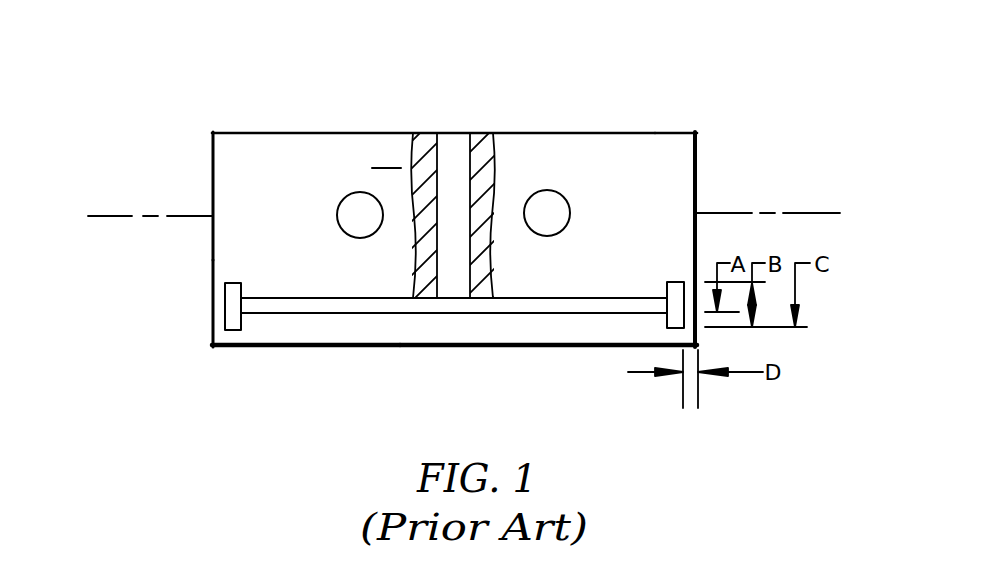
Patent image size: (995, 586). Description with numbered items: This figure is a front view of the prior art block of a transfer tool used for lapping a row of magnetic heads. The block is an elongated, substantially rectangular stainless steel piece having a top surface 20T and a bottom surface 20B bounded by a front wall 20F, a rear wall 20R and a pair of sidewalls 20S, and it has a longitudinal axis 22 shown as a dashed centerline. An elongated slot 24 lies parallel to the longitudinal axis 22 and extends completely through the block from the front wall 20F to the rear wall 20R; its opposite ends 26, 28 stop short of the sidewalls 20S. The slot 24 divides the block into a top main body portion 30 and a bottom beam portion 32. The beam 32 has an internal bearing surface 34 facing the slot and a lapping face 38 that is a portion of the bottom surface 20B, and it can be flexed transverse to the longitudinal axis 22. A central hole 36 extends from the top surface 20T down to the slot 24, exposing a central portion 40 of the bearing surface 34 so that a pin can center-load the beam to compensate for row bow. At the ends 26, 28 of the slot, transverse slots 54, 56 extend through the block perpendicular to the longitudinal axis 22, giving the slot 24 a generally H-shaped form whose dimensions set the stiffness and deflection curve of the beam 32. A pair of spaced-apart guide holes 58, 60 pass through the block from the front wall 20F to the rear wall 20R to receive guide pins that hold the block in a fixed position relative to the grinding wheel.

The top surface 20T is at (272, 133).
The bottom surface 20B is at (277, 348).
The front wall 20F is at (622, 147).
The rear wall 20R is at (655, 133).
The sidewalls 20S is at (213, 192).
The longitudinal axis 22 is at (115, 217).
The elongated slot 24 is at (405, 305).
The end of elongated slot 26 is at (225, 325).
The end of elongated slot 28 is at (691, 300).
The top main body portion 30 is at (507, 160).
The bottom beam portion 32 is at (559, 323).
The bearing surface 34 is at (360, 313).
The central hole 36 is at (462, 155).
The lapping face 38 is at (493, 345).
The central portion of bearing surface 40 is at (468, 313).
The transverse slot 54 is at (233, 303).
The transverse slot 56 is at (673, 290).
The guide hole 58 is at (353, 192).
The guide hole 60 is at (552, 192).